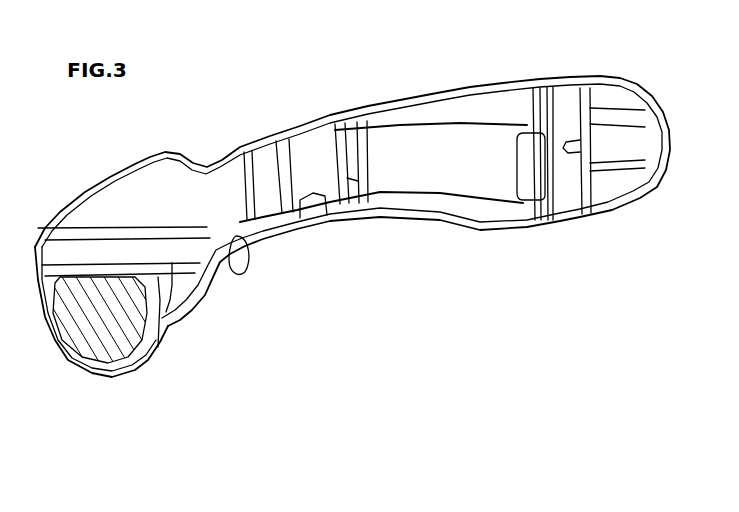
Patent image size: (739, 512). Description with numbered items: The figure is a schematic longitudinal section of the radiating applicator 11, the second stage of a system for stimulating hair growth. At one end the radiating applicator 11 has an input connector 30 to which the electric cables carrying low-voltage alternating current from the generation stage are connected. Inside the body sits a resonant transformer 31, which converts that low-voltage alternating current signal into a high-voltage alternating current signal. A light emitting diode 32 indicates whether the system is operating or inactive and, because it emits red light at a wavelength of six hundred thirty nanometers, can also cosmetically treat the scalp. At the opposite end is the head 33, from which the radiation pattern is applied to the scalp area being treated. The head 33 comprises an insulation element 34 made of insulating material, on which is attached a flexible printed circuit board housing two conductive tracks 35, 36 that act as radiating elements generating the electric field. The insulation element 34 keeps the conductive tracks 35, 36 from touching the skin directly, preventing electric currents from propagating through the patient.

The radiating applicator 11 is at (523, 300).
The input connector 30 is at (627, 127).
The resonant transformer 31 is at (428, 133).
The light emitting diode 32 is at (228, 282).
The head 33 is at (200, 340).
The insulation element 34 is at (172, 345).
The conductive track 35 is at (87, 363).
The conductive track 36 is at (57, 350).